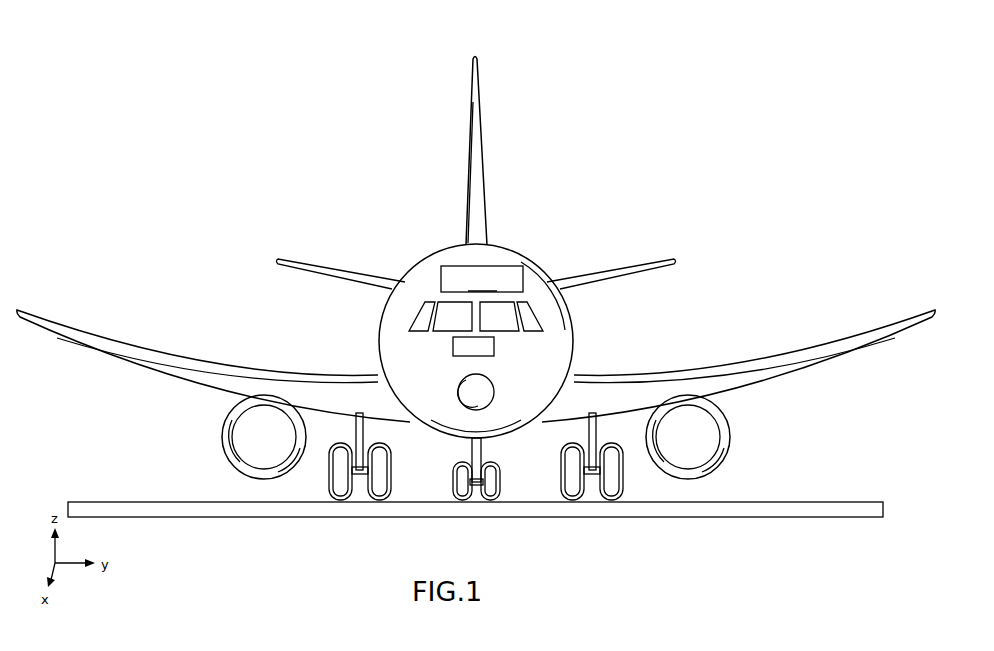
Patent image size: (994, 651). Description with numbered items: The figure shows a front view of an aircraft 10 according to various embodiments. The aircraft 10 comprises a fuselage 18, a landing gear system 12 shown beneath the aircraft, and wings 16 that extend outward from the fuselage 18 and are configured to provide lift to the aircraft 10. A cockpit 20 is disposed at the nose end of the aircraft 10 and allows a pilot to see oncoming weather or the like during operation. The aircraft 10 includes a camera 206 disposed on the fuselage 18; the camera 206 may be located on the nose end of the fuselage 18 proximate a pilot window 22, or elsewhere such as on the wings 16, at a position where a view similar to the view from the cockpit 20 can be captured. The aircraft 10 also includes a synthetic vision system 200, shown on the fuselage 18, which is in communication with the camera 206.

The aircraft 10 is at (368, 65).
The landing gear system 12 is at (514, 458).
The wings 16 is at (192, 373).
The fuselage 18 is at (485, 254).
The cockpit 20 is at (500, 315).
The pilot window 22 is at (452, 313).
The synthetic vision system 200 is at (482, 279).
The camera 206 is at (494, 343).